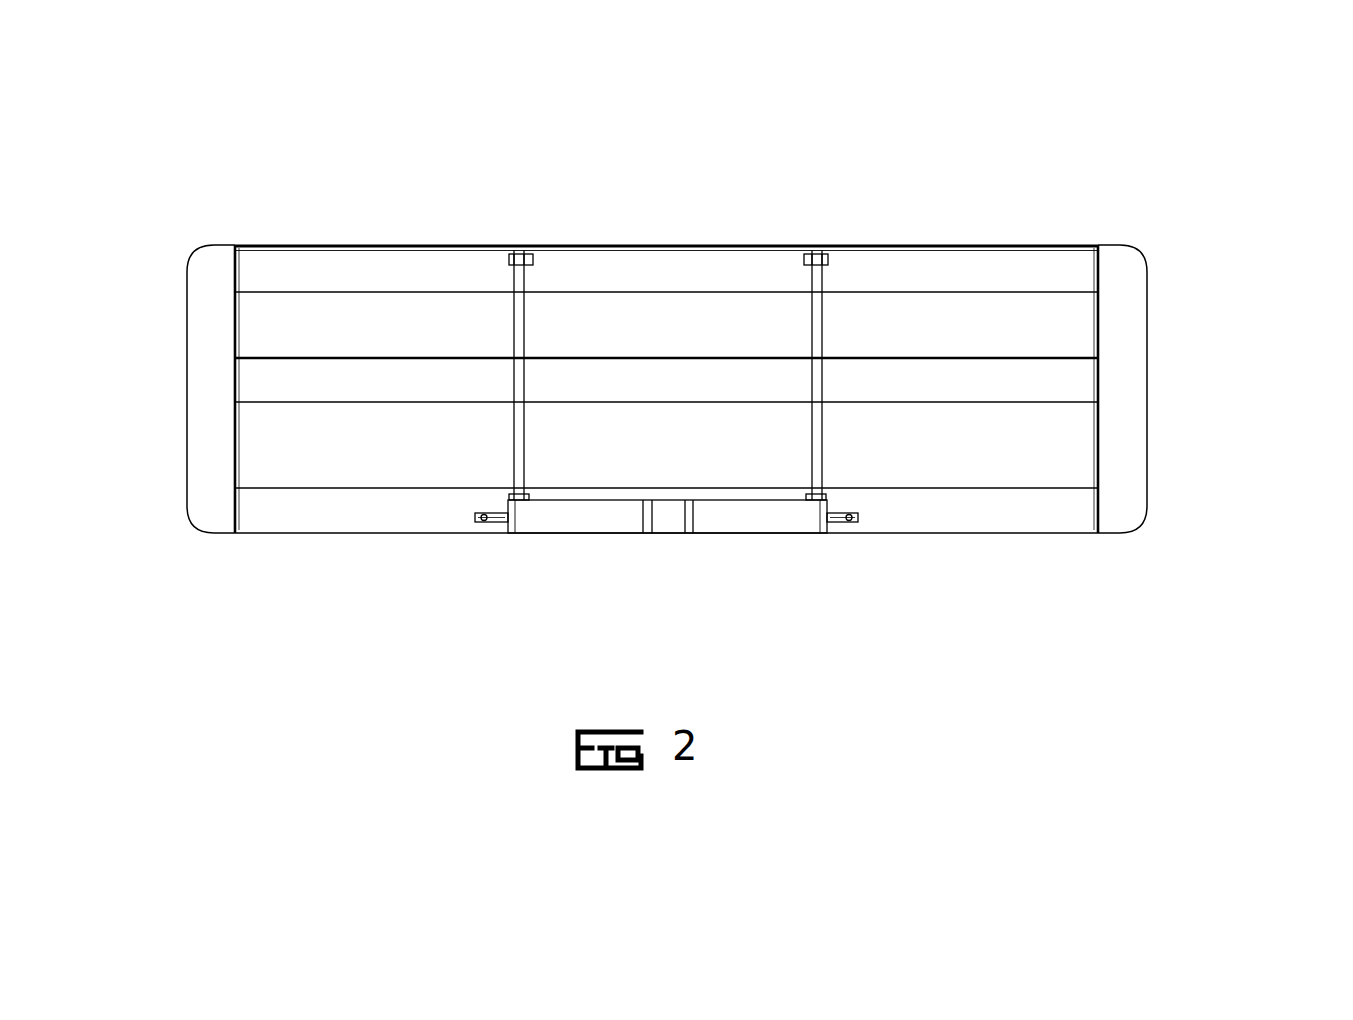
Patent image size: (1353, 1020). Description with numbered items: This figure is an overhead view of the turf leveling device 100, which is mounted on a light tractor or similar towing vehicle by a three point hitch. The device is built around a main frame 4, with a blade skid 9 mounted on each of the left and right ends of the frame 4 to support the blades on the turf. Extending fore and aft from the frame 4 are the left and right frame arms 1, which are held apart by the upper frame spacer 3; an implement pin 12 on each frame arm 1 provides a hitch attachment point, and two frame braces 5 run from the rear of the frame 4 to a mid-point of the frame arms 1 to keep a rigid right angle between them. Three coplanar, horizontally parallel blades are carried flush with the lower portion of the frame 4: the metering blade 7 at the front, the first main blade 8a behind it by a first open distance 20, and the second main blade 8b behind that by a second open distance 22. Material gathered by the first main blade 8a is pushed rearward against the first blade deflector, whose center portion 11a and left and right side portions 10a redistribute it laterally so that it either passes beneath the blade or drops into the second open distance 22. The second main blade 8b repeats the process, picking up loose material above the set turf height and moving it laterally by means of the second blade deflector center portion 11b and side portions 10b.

The turf leveling device 100 is at (226, 156).
The frame arm 1 is at (633, 524).
The upper frame spacer 3 is at (667, 525).
The frame 4 is at (815, 248).
The frame brace 5 is at (523, 247).
The metering blade 7 is at (340, 517).
The first main blade 8a is at (372, 362).
The second main blade 8b is at (268, 247).
The blade skid 9 is at (210, 330).
The first blade deflector side portion 10a is at (310, 388).
The second blade deflector side portion 10b is at (333, 272).
The first blade deflector center portion 11a is at (625, 388).
The second blade deflector center portion 11b is at (620, 270).
The implement pin 12 is at (475, 517).
The first open distance 20 is at (555, 405).
The second open distance 22 is at (267, 295).